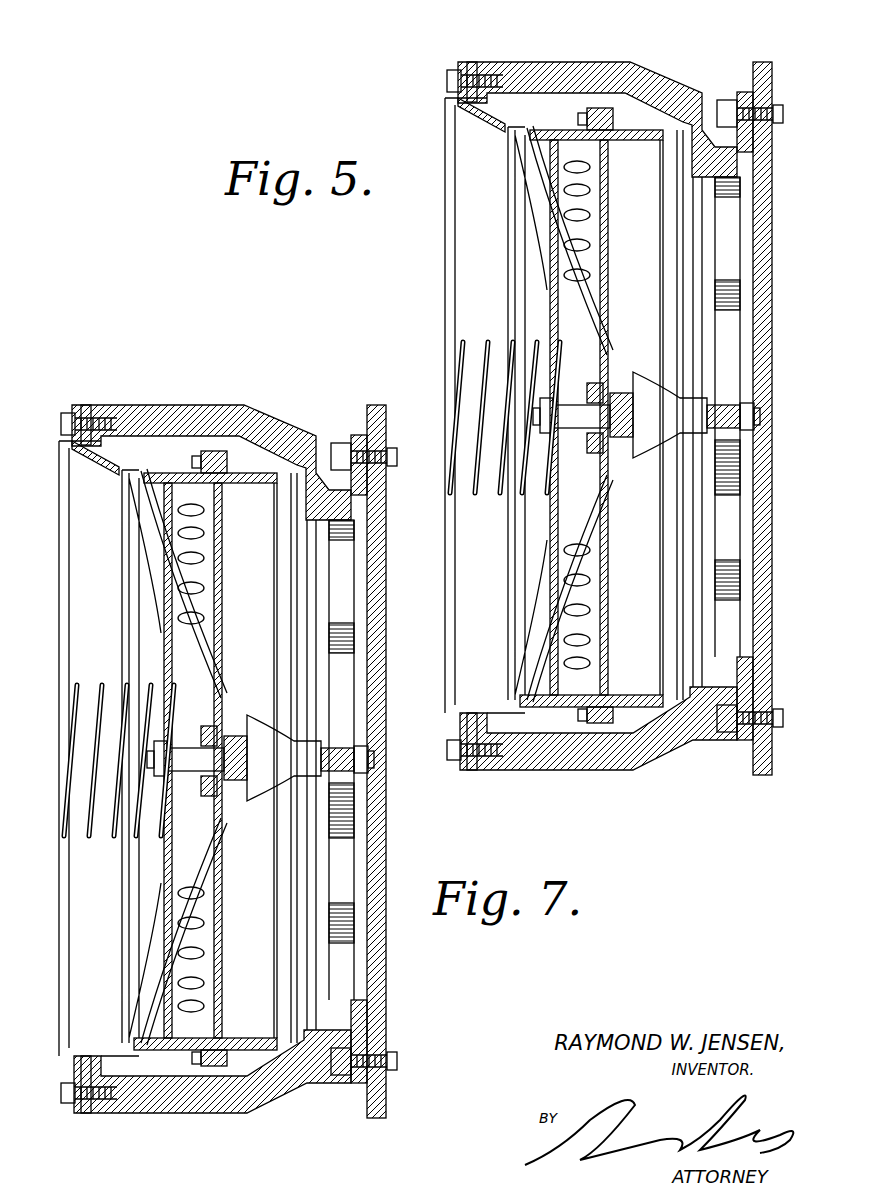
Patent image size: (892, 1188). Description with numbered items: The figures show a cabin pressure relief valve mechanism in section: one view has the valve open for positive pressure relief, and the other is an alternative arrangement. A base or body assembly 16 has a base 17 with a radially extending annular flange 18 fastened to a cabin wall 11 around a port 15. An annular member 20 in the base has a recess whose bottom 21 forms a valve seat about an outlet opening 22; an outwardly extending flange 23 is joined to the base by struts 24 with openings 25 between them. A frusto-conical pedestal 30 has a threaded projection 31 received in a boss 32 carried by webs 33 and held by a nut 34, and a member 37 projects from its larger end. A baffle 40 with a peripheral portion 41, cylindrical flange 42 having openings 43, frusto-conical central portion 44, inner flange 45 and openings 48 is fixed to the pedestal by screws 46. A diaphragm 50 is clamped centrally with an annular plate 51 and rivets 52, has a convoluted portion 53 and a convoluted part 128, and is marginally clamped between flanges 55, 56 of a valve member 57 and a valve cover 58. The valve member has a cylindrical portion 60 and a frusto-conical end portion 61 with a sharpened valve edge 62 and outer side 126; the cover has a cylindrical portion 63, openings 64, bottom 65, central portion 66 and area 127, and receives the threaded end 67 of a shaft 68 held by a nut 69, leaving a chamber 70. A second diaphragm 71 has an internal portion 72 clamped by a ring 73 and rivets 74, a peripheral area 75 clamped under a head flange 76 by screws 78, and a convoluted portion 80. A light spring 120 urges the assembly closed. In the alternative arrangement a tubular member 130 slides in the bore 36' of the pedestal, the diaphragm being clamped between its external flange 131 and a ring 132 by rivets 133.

In FIG. 5, the walls 11 is at (765, 83).
In FIG. 7, the walls 11 is at (394, 753).
In FIG. 5, the port 15 is at (760, 258).
In FIG. 7, the port 15 is at (400, 524).
In FIG. 5, the base or body assembly 16 is at (689, 70).
In FIG. 7, the base or body assembly 16 is at (255, 362).
In FIG. 5, the base 17 is at (725, 690).
In FIG. 7, the base 17 is at (378, 1041).
In FIG. 5, the annular flange 18 is at (745, 92).
In FIG. 7, the annular flange 18 is at (363, 447).
In FIG. 7, the annular member 20 is at (327, 417).
In FIG. 5, the bottom / valve seat 21 is at (680, 730).
In FIG. 7, the bottom / valve seat 21 is at (212, 1072).
In FIG. 5, the outlet opening 22 is at (703, 630).
In FIG. 7, the outlet opening 22 is at (366, 775).
In FIG. 7, the outwardly extending flange 23 is at (91, 404).
In FIG. 5, the struts 24 is at (602, 70).
In FIG. 7, the struts 24 is at (211, 775).
In FIG. 7, the openings 25 is at (285, 1117).
In FIG. 5, the pedestal 30 is at (658, 415).
In FIG. 7, the pedestal 30 is at (320, 777).
In FIG. 5, the threaded projection 31 is at (757, 415).
In FIG. 7, the threaded projection 31 is at (380, 749).
In FIG. 5, the boss 32 is at (730, 403).
In FIG. 7, the boss 32 is at (368, 774).
In FIG. 5, the webs 33 is at (735, 300).
In FIG. 7, the webs 33 is at (372, 760).
In FIG. 7, the nut 34 is at (392, 759).
In FIG. 7, the bore 36' is at (359, 800).
In FIG. 5, the member / tubular extension 37 is at (630, 395).
In FIG. 7, the member / tubular extension 37 is at (247, 821).
In FIG. 5, the baffle 40 is at (594, 235).
In FIG. 5, the peripheral portion 41 is at (555, 200).
In FIG. 7, the peripheral portion 41 is at (205, 761).
In FIG. 7, the cylindrical flange 42 is at (220, 517).
In FIG. 5, the openings 43 is at (585, 283).
In FIG. 7, the openings 43 is at (223, 934).
In FIG. 5, the central portion 44 is at (600, 318).
In FIG. 7, the central portion 44 is at (228, 658).
In FIG. 5, the flange 45 is at (618, 450).
In FIG. 5, the screws 46 is at (620, 435).
In FIG. 7, the screws 46 is at (250, 707).
In FIG. 5, the openings 48 is at (620, 345).
In FIG. 7, the openings 48 is at (233, 846).
In FIG. 5, the diaphragm 50 is at (567, 287).
In FIG. 7, the diaphragm 50 is at (167, 757).
In FIG. 5, the annular plate 51 is at (593, 378).
In FIG. 5, the rivets 52 is at (593, 450).
In FIG. 5, the convoluted portion 53 is at (612, 470).
In FIG. 5, the flange 55 is at (608, 722).
In FIG. 7, the flange 55 is at (248, 427).
In FIG. 5, the flange 56 is at (602, 715).
In FIG. 5, the movable outflow valve member 57 is at (639, 681).
In FIG. 7, the movable outflow valve member 57 is at (235, 1007).
In FIG. 5, the valve cover 58 is at (522, 582).
In FIG. 7, the valve cover 58 is at (112, 889).
In FIG. 5, the cylindrical portion 60 is at (630, 703).
In FIG. 7, the cylindrical portion 60 is at (255, 1017).
In FIG. 5, the frusto-conical end portion 61 is at (670, 672).
In FIG. 7, the frusto-conical end portion 61 is at (253, 760).
In FIG. 5, the valve edge 62 is at (680, 595).
In FIG. 7, the valve edge 62 is at (358, 758).
In FIG. 5, the cylindrical portion 63 is at (583, 705).
In FIG. 7, the cylindrical portion 63 is at (208, 1095).
In FIG. 5, the openings 64 is at (545, 702).
In FIG. 7, the openings 64 is at (169, 1055).
In FIG. 5, the end wall or bottom 65 is at (525, 627).
In FIG. 7, the end wall or bottom 65 is at (112, 974).
In FIG. 5, the central portion 66 is at (560, 345).
In FIG. 7, the central portion 66 is at (159, 842).
In FIG. 5, the threaded end 67 is at (540, 413).
In FIG. 5, the shaft 68 is at (555, 438).
In FIG. 7, the shaft 68 is at (124, 752).
In FIG. 7, the nut 69 is at (95, 759).
In FIG. 5, the chamber 70 is at (535, 195).
In FIG. 7, the chamber 70 is at (121, 763).
In FIG. 5, the second diaphragm 71 is at (454, 172).
In FIG. 7, the second diaphragm 71 is at (47, 511).
In FIG. 5, the internal portion 72 is at (510, 652).
In FIG. 7, the internal portion 72 is at (105, 532).
In FIG. 5, the ring 73 is at (510, 170).
In FIG. 7, the ring 73 is at (98, 1017).
In FIG. 5, the rivets 74 is at (508, 675).
In FIG. 7, the rivets 74 is at (72, 521).
In FIG. 5, the peripheral area 75 is at (478, 72).
In FIG. 7, the peripheral area 75 is at (89, 1108).
In FIG. 5, the outwardly extending flange 76 is at (452, 68).
In FIG. 7, the outwardly extending flange 76 is at (51, 1125).
In FIG. 5, the screws 78 is at (445, 78).
In FIG. 7, the screws 78 is at (38, 1104).
In FIG. 5, the convoluted portion 80 is at (455, 128).
In FIG. 7, the convoluted portion 80 is at (71, 748).
In FIG. 5, the spring 120 is at (463, 353).
In FIG. 7, the spring 120 is at (95, 760).
In FIG. 5, the outer side 126 is at (690, 745).
In FIG. 7, the outer side 126 is at (295, 437).
In FIG. 5, the area 127 is at (520, 130).
In FIG. 7, the area 127 is at (183, 462).
In FIG. 5, the convoluted part 128 is at (610, 143).
In FIG. 7, the movable tubular member 130 is at (240, 692).
In FIG. 7, the external flange 131 is at (200, 808).
In FIG. 7, the ring 132 is at (127, 830).
In FIG. 7, the rivets 133 is at (203, 717).